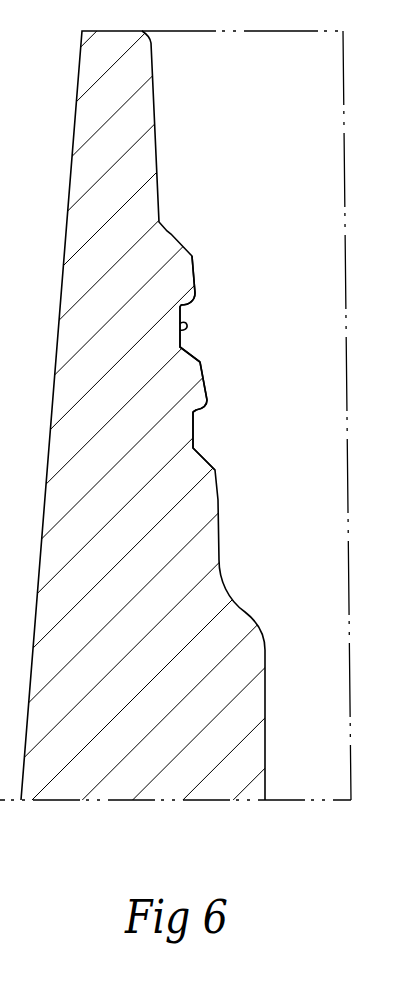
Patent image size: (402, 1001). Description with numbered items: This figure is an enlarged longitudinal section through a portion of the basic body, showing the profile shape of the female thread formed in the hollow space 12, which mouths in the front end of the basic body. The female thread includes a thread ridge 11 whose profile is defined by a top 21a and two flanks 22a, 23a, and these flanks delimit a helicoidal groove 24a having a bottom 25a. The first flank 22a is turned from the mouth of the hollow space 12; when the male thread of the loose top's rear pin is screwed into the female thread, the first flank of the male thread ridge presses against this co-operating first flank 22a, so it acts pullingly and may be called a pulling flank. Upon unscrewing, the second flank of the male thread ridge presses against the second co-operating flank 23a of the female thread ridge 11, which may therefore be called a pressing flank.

The hollow space 12 is at (174, 100).
The female thread ridge 11 is at (200, 397).
The top 21a is at (208, 381).
The first flank 22a is at (199, 301).
The second flank 23a is at (192, 351).
The helicoidal groove 24a is at (197, 325).
The bottom 25a is at (186, 326).